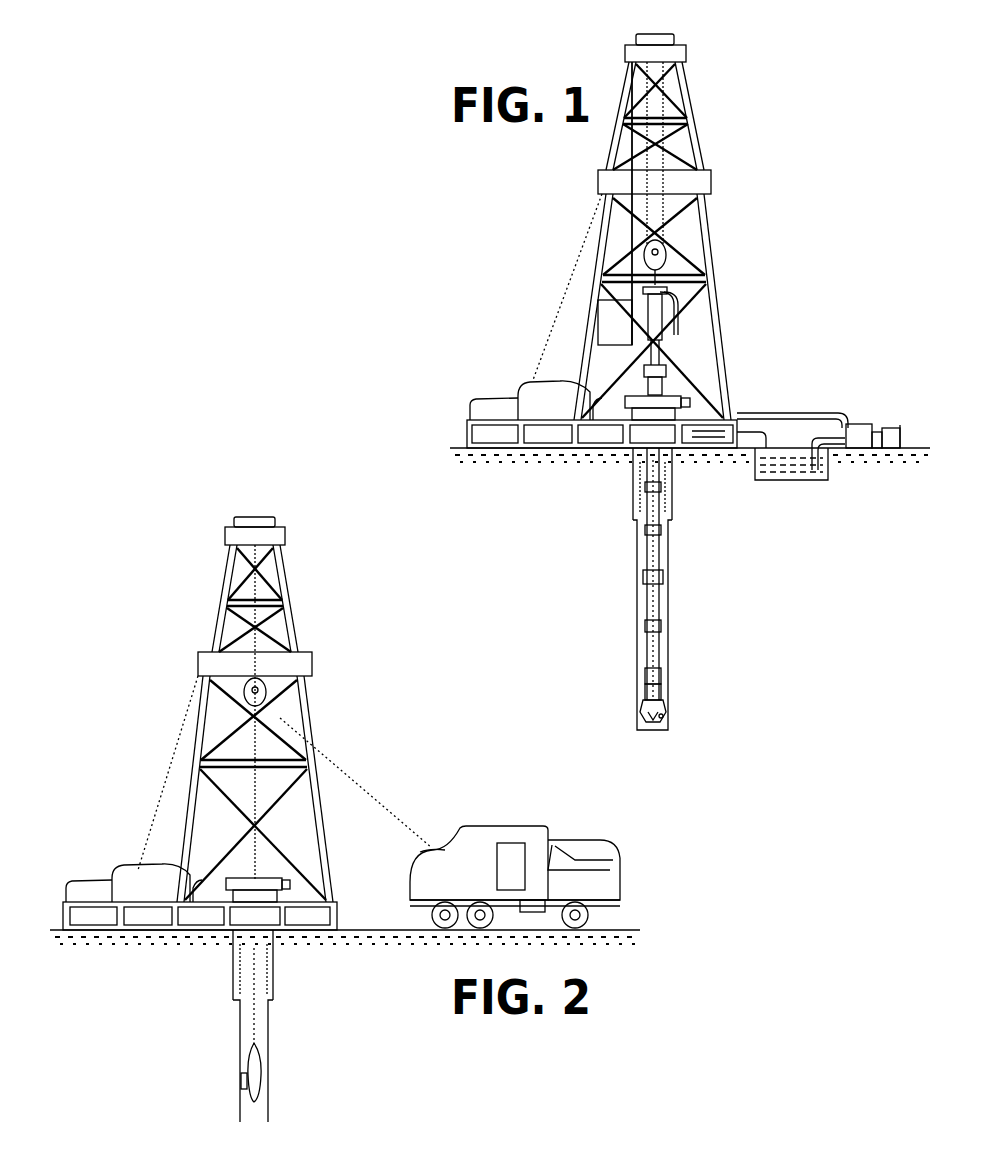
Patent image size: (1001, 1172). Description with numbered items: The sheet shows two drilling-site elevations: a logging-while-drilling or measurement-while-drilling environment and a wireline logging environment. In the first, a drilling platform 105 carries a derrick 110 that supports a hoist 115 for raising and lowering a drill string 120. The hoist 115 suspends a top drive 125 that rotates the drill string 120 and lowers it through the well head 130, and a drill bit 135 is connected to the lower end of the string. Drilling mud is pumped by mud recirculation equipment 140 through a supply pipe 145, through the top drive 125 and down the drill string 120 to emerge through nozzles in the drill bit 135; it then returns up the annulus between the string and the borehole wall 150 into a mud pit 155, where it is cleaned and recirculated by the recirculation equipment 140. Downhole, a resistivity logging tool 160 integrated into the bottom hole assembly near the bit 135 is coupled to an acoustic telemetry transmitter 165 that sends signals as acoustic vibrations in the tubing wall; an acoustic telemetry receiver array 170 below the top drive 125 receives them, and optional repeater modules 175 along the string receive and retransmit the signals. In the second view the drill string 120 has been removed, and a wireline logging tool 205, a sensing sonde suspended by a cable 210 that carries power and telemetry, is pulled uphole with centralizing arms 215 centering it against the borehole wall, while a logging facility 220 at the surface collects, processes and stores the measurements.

In FIG. 1, the drilling platform 105 is at (468, 422).
In FIG. 2, the drilling platform 105 is at (338, 912).
In FIG. 1, the derrick 110 is at (694, 148).
In FIG. 2, the derrick 110 is at (328, 872).
In FIG. 1, the hoist 115 is at (668, 247).
In FIG. 2, the hoist 115 is at (266, 690).
In FIG. 1, the drill string 120 is at (660, 560).
In FIG. 1, the top drive 125 is at (656, 310).
In FIG. 1, the well head 130 is at (670, 402).
In FIG. 2, the well head 130 is at (272, 880).
In FIG. 1, the drill bit 135 is at (665, 716).
In FIG. 1, the mud recirculation equipment 140 is at (860, 428).
In FIG. 1, the supply pipe 145 is at (800, 414).
In FIG. 1, the borehole wall 150 is at (669, 565).
In FIG. 1, the mud pit 155 is at (760, 480).
In FIG. 1, the resistivity logging tool 160 is at (645, 694).
In FIG. 1, the acoustic telemetry transmitter 165 is at (645, 680).
In FIG. 1, the acoustic telemetry receiver array 170 is at (660, 372).
In FIG. 1, the repeater module 175 is at (645, 585).
In FIG. 2, the wireline logging tool 205 is at (248, 1068).
In FIG. 2, the cable 210 is at (322, 757).
In FIG. 2, the centralizing arms 215 is at (243, 1083).
In FIG. 2, the logging facility 220 is at (478, 826).